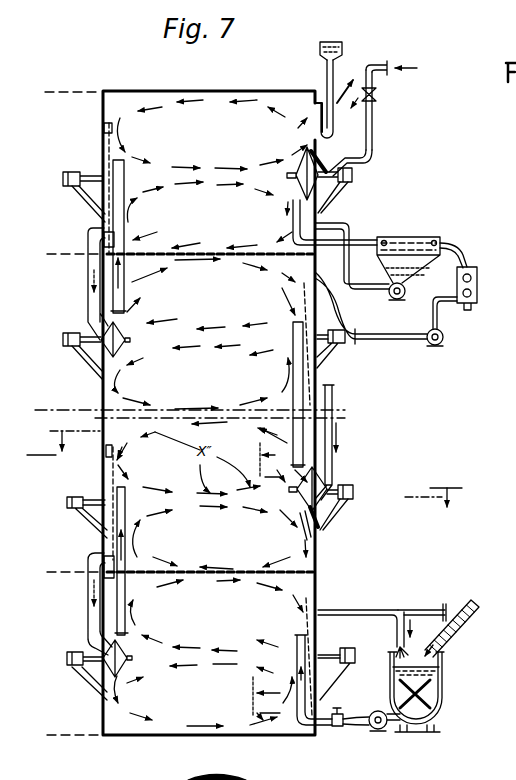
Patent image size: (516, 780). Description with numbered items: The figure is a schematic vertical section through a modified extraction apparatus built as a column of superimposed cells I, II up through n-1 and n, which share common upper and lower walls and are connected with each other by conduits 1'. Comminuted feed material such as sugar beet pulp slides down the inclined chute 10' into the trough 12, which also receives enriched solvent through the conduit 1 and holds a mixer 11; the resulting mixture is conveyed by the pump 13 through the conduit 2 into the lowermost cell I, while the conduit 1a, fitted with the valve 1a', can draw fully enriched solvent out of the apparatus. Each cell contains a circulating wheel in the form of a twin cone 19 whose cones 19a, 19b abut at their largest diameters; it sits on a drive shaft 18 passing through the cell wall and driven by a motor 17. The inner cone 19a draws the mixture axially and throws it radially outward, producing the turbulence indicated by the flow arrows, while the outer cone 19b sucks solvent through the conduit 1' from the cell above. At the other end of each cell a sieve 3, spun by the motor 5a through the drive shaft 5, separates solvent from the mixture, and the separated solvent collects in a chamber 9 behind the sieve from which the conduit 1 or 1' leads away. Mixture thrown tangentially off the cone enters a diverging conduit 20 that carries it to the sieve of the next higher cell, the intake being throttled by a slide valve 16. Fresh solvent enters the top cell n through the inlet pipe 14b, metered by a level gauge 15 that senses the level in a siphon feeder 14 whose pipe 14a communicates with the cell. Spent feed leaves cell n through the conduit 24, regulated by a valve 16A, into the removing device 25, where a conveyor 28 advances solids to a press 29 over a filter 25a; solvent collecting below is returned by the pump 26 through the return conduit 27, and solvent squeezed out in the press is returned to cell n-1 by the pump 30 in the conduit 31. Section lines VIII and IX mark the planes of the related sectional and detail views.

The conduit 1 is at (364, 621).
The conduit 1a is at (421, 598).
The valve 1a' is at (459, 599).
The conduit 1' is at (212, 441).
The conduit 2 is at (333, 731).
The sieve 3 is at (302, 297).
The drive shaft 5 is at (92, 500).
The motor 5a is at (337, 343).
The chamber 9 is at (105, 463).
The inclined chute 10' is at (463, 628).
The mixer 11 is at (422, 701).
The trough 12 is at (444, 683).
The pump 13 is at (376, 731).
The siphon feeder 14 is at (320, 50).
The pipe 14a is at (327, 76).
The inlet pipe 14b is at (373, 129).
The level gauge 15 is at (377, 79).
The slide valve 16 is at (214, 412).
The valve 16A is at (291, 206).
The motor 17 is at (352, 174).
The drive shaft 18 is at (337, 484).
The twin cone 19 is at (303, 512).
The cone 19a is at (126, 676).
The cone 19b is at (316, 162).
The conduit 20 is at (298, 657).
The conduit 24 is at (362, 240).
The feed material removing device 25 is at (409, 235).
The filter 25a is at (419, 256).
The pump 26 is at (406, 293).
The return conduit 27 is at (341, 223).
The conveyor 28 is at (438, 240).
The press 29 is at (480, 280).
The pump 30 is at (447, 341).
The conduit 31 is at (382, 341).
The cell n is at (135, 92).
The cell n-1 is at (107, 403).
The cell I is at (122, 734).
The cell II is at (319, 558).
The section line VIII is at (244, 469).
The section line IX is at (269, 581).